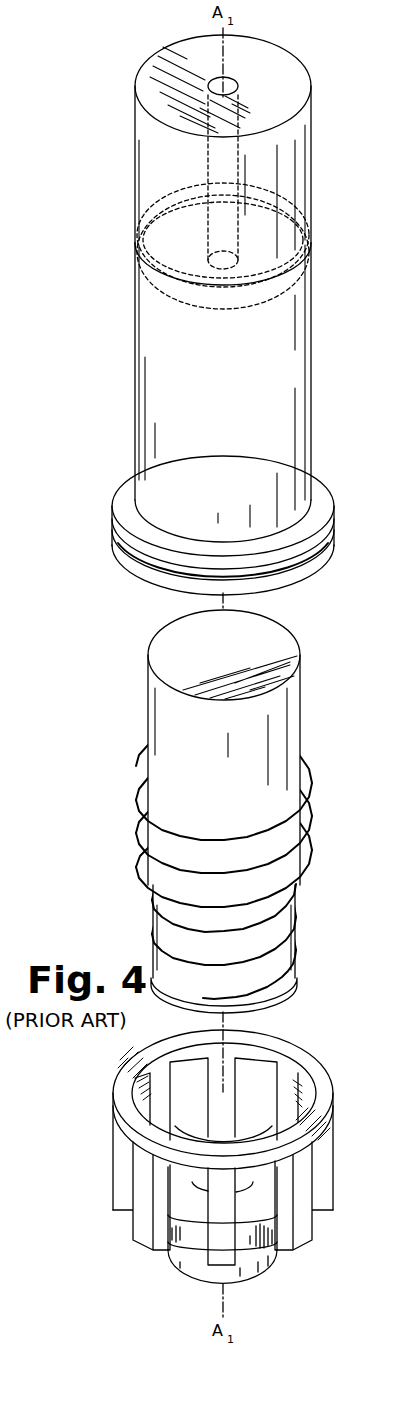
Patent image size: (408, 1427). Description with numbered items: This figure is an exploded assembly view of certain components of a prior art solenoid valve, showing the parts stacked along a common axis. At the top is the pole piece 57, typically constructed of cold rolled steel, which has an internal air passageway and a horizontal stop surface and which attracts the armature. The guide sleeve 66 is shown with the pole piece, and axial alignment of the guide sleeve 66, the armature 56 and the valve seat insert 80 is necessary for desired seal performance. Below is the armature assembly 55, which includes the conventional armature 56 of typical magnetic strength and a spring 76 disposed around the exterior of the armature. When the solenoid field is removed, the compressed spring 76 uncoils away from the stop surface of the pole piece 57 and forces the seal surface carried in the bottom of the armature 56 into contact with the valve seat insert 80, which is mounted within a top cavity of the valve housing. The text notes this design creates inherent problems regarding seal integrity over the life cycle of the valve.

The armature assembly 55 is at (104, 776).
The armature 56 is at (172, 720).
The pole piece 57 is at (155, 174).
The guide sleeve 66 is at (173, 343).
The spring 76 is at (138, 873).
The valve seat insert 80 is at (99, 1155).